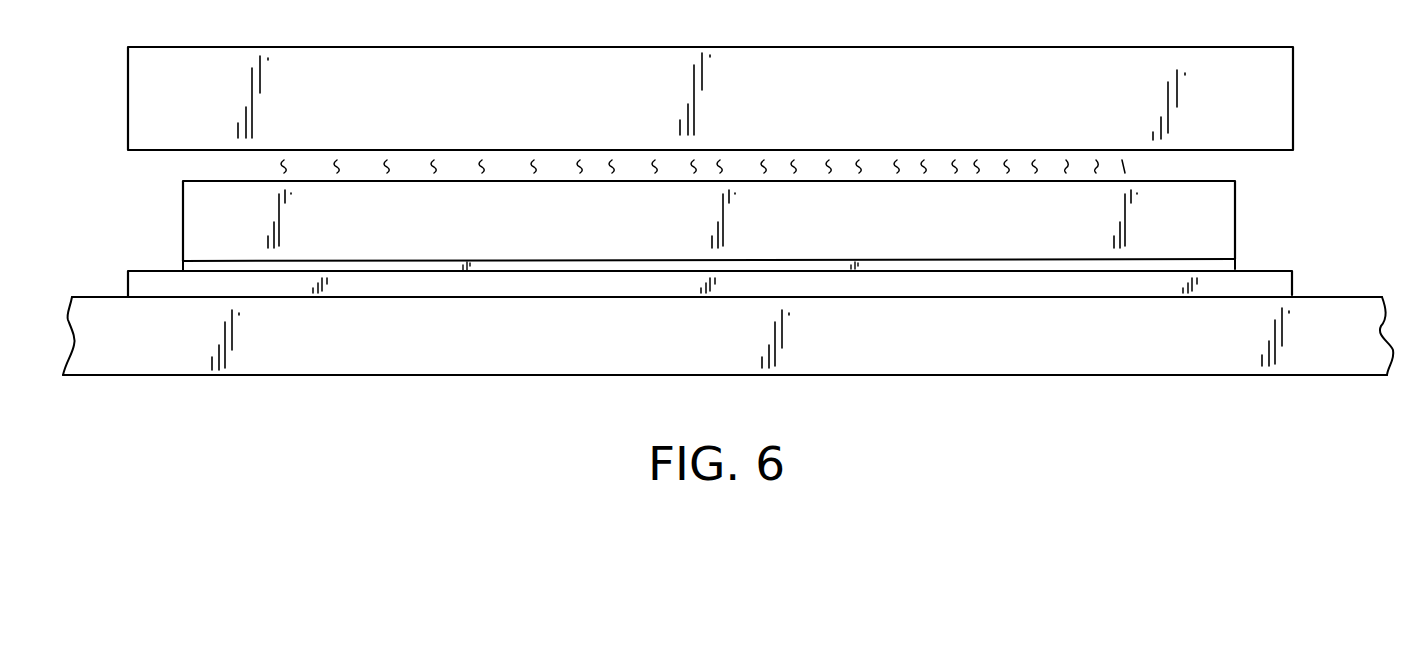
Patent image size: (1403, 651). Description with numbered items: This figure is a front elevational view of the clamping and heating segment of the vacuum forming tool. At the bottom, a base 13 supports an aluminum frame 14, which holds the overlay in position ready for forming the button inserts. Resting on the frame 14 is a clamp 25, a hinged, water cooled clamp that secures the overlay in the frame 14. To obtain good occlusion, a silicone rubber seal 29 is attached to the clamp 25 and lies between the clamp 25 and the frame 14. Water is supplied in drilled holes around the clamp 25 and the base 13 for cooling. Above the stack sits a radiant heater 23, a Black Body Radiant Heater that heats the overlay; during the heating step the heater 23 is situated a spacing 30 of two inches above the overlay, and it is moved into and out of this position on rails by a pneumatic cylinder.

The base 13 is at (1307, 360).
The frame 14 is at (1285, 283).
The radiant heater 23 is at (1278, 95).
The clamp 25 is at (1225, 213).
The silicone rubber seal 29 is at (1228, 263).
The two inch spacing 30 is at (1243, 167).